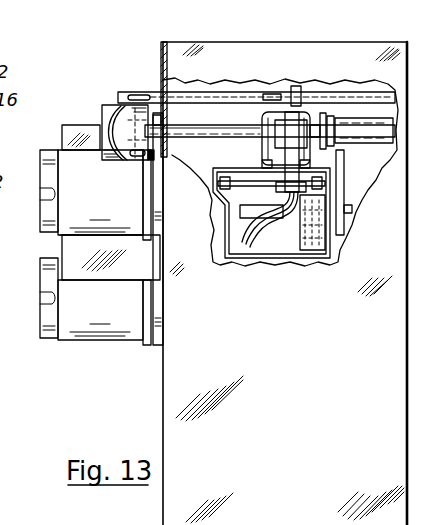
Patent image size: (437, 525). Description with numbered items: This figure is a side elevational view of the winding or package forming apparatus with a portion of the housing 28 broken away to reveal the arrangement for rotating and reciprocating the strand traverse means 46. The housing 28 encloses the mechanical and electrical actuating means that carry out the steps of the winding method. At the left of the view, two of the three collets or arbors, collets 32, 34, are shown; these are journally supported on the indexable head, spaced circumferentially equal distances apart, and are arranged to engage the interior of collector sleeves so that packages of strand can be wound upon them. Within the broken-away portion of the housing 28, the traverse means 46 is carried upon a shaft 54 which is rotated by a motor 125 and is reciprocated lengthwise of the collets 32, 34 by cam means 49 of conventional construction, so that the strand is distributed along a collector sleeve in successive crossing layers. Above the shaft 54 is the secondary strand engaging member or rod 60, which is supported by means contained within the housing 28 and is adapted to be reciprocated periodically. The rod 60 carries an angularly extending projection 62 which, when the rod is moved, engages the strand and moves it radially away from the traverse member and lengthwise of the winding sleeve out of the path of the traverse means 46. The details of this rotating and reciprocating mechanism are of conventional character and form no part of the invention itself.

The housing 28 is at (372, 43).
The secondary strand engaging member 60 is at (181, 92).
The angularly extending projection 62 is at (134, 95).
The shaft 54 is at (220, 127).
The strand traverse means 46 is at (106, 110).
The motor 125 is at (312, 118).
The cam means 49 is at (241, 242).
The collet 32 is at (43, 204).
The collet 34 is at (43, 304).